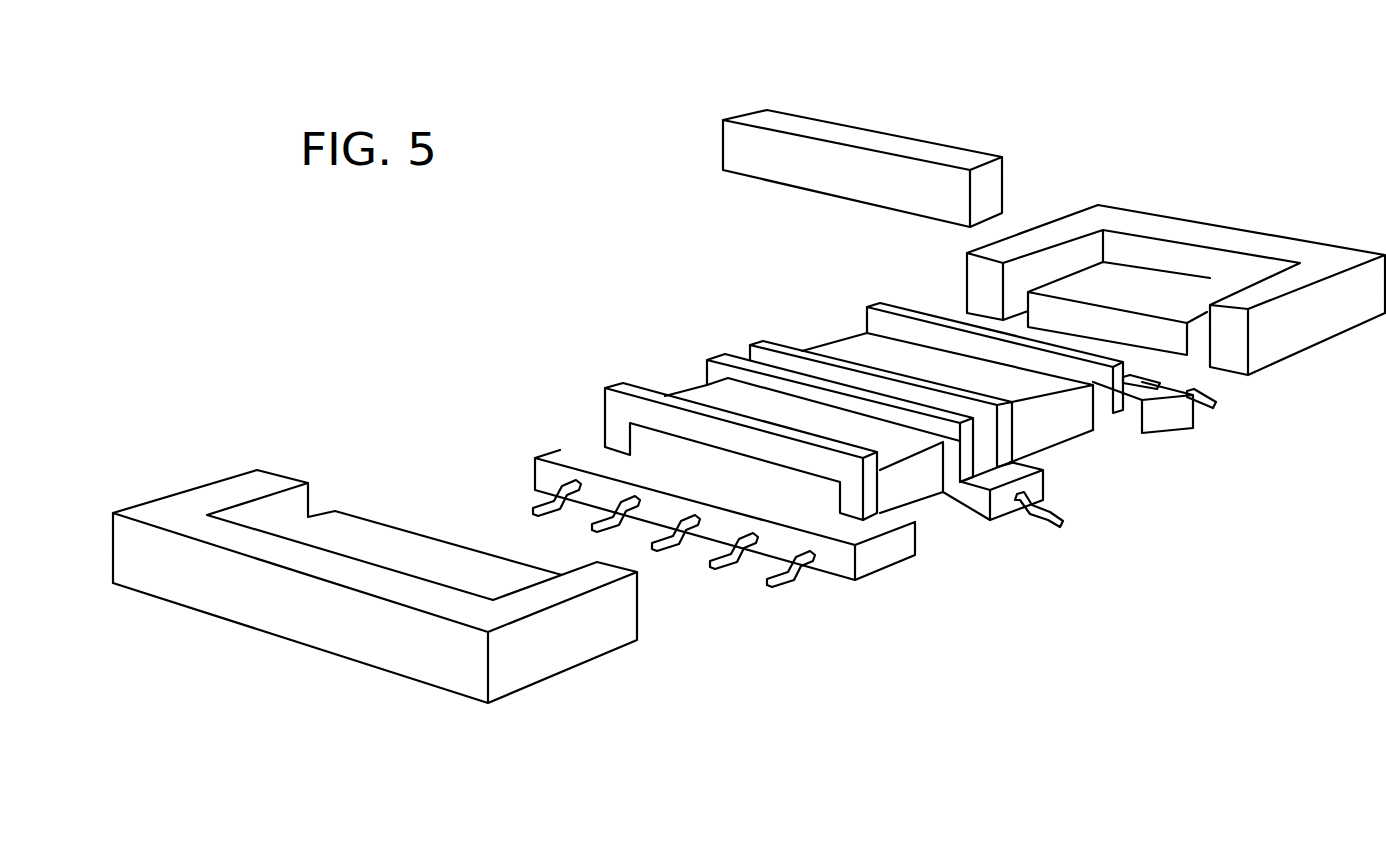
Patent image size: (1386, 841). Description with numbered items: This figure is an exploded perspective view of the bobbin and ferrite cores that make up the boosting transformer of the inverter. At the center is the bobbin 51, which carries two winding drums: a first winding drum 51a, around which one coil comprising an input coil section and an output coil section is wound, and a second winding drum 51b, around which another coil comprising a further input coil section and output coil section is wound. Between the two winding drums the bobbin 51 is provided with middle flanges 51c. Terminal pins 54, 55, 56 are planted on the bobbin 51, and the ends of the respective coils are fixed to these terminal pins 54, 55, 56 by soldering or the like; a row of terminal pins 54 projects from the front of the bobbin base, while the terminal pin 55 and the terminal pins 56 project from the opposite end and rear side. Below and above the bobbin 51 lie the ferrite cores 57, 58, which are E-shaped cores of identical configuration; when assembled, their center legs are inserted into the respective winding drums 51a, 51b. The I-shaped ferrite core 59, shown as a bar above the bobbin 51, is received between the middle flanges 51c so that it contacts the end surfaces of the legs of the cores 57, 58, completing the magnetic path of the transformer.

The bobbin 51 is at (808, 424).
The winding drum 51a is at (705, 388).
The winding drum 51b is at (865, 348).
The middle flanges 51c is at (760, 359).
The terminal pins 54 is at (612, 535).
The terminal pin 55 is at (1037, 522).
The terminal pins 56 is at (1133, 377).
The ferrite core 57 is at (280, 612).
The ferrite core 58 is at (1228, 215).
The I-shaped ferrite core 59 is at (903, 160).